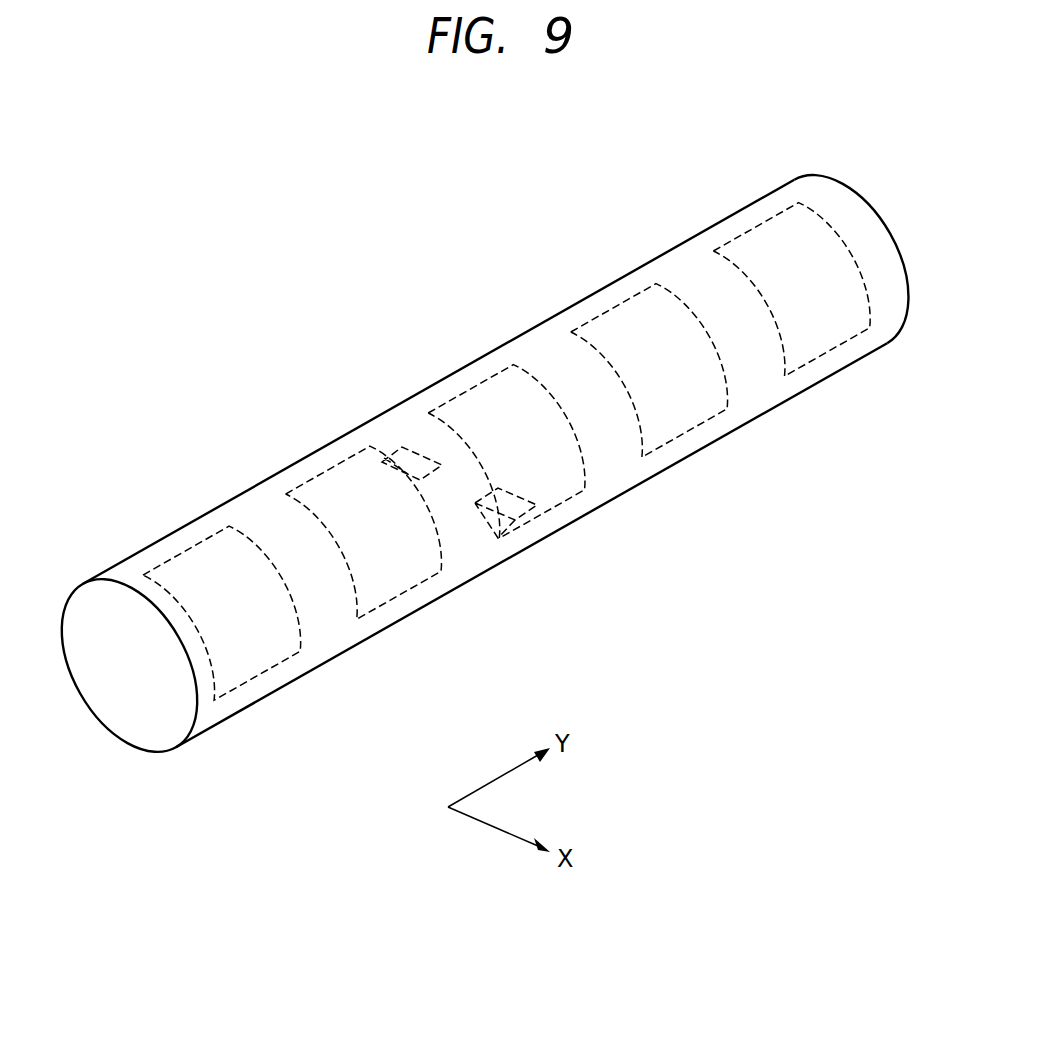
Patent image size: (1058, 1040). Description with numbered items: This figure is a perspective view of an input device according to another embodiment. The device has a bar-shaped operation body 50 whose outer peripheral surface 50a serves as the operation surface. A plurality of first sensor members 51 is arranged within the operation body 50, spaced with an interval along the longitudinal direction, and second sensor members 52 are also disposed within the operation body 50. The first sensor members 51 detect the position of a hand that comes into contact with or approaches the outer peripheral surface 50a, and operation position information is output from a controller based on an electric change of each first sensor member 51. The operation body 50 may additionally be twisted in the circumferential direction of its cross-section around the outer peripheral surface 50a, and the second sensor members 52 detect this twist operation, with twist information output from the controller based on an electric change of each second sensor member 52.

The operation body 50 is at (438, 392).
The outer peripheral surface 50a is at (330, 643).
The first sensor members 51 is at (178, 552).
The second sensor members 52 is at (397, 452).